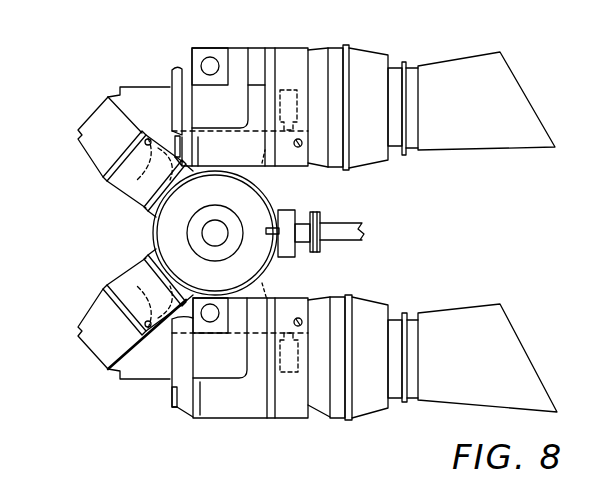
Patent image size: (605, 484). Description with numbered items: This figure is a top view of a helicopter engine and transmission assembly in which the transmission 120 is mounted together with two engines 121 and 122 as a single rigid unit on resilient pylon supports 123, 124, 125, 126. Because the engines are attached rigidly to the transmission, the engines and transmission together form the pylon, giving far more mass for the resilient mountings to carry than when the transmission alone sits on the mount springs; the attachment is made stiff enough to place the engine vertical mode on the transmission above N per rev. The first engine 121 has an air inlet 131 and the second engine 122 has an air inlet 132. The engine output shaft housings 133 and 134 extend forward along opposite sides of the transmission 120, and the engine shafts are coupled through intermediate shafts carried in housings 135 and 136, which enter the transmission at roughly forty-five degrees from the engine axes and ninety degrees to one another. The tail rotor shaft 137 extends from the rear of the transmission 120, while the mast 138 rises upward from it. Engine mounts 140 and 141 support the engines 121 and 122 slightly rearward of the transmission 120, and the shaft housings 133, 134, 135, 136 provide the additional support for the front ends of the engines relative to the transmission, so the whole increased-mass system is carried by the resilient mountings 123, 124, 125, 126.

The transmission 120 is at (173, 227).
The engine 121 is at (257, 63).
The engine 122 is at (254, 400).
The resilient pylon support 123 is at (137, 188).
The resilient pylon support 124 is at (302, 162).
The resilient pylon support 125 is at (130, 340).
The resilient pylon support 126 is at (302, 322).
The air inlet 131 is at (165, 82).
The air inlet 132 is at (178, 357).
The engine output shaft housing 133 is at (128, 92).
The engine output shaft housing 134 is at (137, 365).
The intermediate shaft housing 135 is at (110, 143).
The intermediate shaft housing 136 is at (93, 313).
The tail rotor shaft 137 is at (363, 230).
The mast 138 is at (220, 227).
The engine mount 140 is at (300, 92).
The engine mount 141 is at (290, 372).